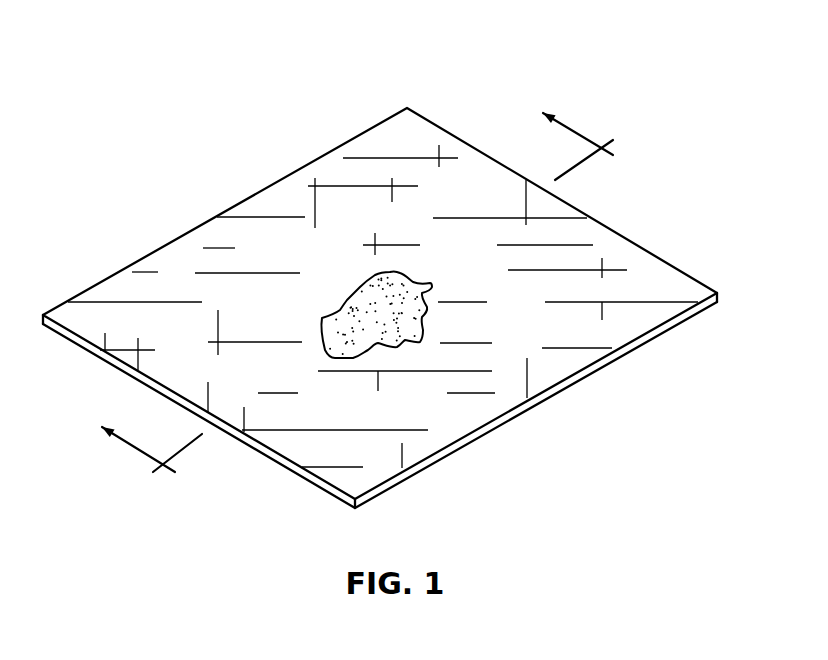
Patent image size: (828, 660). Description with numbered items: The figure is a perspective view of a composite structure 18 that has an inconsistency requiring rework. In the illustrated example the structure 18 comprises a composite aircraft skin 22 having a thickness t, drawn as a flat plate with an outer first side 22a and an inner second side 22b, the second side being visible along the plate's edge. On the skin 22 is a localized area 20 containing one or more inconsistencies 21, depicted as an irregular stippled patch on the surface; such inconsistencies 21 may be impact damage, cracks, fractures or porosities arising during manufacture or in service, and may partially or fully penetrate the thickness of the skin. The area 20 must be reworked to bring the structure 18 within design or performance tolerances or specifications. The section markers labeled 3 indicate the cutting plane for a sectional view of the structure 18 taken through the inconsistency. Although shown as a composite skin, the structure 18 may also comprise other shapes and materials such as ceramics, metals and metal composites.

The composite structure 18 is at (456, 99).
The localized area 20 is at (313, 268).
The inconsistency 21 is at (345, 335).
The composite aircraft skin 22 is at (380, 193).
The outer first side 22a is at (629, 285).
The inner second side 22b is at (476, 456).
The section line 3- 3 is at (349, 282).